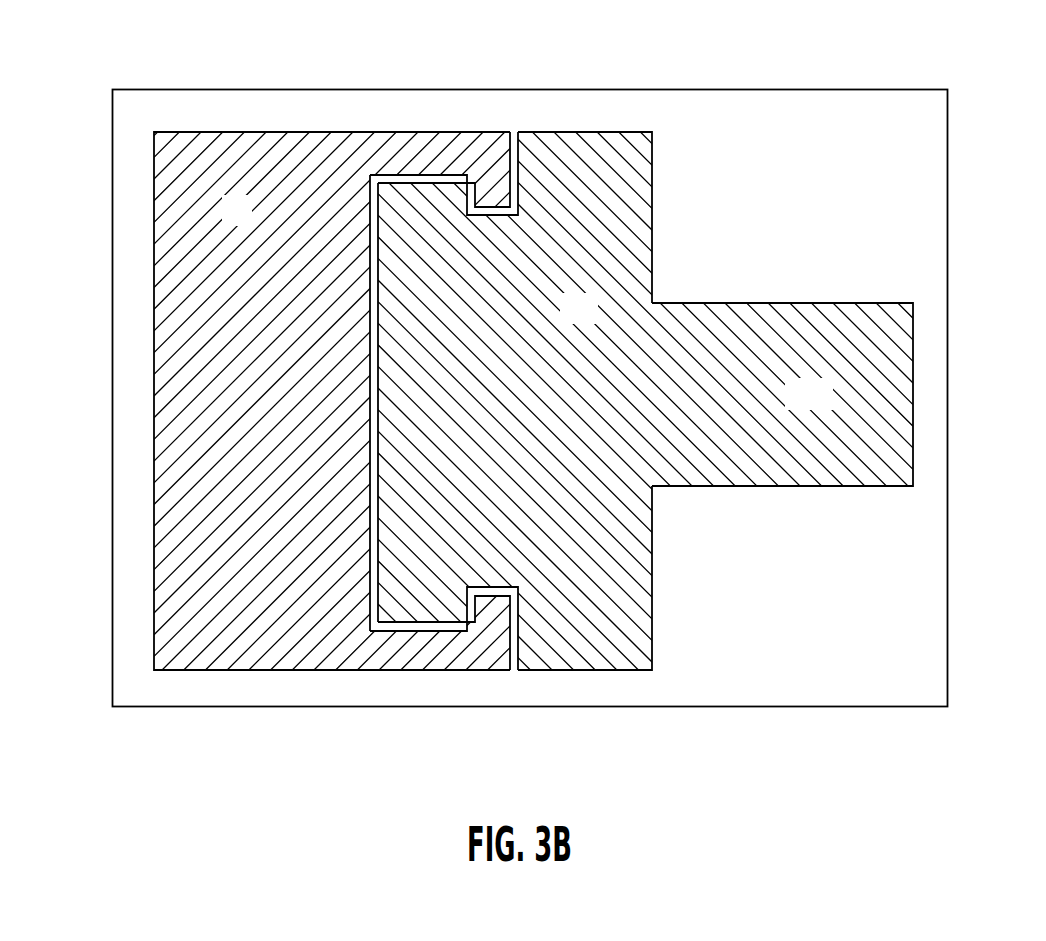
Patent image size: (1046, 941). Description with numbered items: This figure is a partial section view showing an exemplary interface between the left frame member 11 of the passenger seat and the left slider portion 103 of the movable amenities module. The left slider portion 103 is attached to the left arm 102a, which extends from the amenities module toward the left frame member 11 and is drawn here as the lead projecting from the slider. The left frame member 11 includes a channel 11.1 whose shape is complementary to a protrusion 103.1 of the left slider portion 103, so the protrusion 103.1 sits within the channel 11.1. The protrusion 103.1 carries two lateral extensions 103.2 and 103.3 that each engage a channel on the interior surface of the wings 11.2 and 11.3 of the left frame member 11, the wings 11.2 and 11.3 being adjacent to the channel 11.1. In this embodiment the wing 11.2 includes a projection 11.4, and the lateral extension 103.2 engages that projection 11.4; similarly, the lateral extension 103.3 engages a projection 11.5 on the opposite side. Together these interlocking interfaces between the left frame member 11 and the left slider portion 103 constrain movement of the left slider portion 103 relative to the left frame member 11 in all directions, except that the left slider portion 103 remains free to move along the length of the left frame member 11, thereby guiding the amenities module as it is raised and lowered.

The left frame member 11 is at (245, 224).
The channel 11.1 is at (368, 348).
The wing 11.2 is at (436, 155).
The wing 11.3 is at (422, 640).
The projection 11.4 is at (488, 195).
The projection 11.5 is at (492, 603).
The left slider portion 103 is at (592, 322).
The protrusion 103.1 is at (416, 425).
The lateral extension 103.2 is at (409, 198).
The lateral extension 103.3 is at (403, 608).
The left arm 102a is at (827, 407).